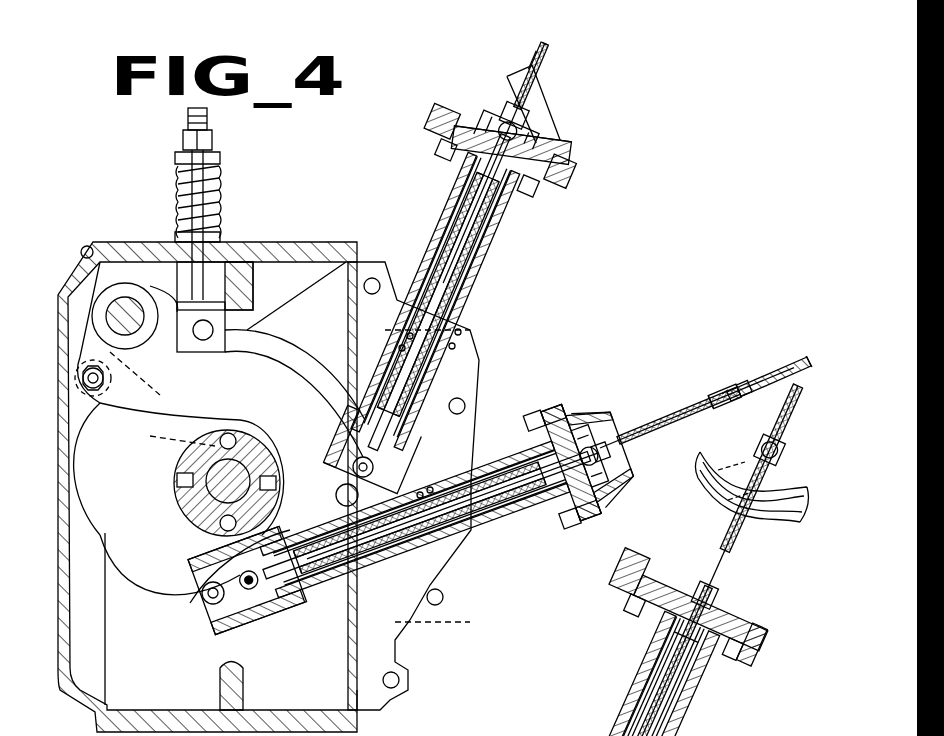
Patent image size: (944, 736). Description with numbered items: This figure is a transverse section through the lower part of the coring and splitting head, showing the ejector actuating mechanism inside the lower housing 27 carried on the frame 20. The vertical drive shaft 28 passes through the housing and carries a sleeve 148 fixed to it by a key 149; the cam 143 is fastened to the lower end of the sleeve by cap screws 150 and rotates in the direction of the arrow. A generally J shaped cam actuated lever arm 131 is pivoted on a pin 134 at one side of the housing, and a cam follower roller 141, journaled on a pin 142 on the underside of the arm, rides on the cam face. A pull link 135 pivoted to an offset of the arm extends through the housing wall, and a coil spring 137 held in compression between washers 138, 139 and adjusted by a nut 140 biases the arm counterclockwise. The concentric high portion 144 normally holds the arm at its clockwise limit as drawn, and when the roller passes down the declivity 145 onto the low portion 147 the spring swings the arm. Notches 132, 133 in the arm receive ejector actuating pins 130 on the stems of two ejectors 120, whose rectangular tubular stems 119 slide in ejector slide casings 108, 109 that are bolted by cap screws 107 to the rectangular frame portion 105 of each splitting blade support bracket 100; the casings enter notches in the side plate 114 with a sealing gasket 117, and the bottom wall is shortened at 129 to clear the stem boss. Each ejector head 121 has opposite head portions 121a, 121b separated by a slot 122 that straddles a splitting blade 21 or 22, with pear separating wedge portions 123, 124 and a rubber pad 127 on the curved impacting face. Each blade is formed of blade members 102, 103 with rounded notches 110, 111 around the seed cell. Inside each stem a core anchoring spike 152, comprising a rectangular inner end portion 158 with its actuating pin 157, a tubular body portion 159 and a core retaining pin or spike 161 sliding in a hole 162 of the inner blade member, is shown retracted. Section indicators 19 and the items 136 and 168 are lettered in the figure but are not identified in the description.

The section line 19- 19 is at (50, 491).
The frame 20 is at (395, 666).
The splitting blade 21 is at (757, 375).
The splitting blade 22 is at (545, 82).
The lower housing 27 is at (360, 694).
The vertical drive shaft 28 is at (200, 512).
The splitting blade support bracket 100 is at (578, 178).
The blade member 102 is at (542, 68).
The blade member 103 is at (800, 360).
The rectangular frame portion 105 is at (438, 131).
The cap screws 107 is at (438, 153).
The ejector slide casing 108 is at (448, 190).
The ejector slide casing 109 is at (477, 266).
The rounded notch 110 is at (640, 400).
The rounded notch 111 is at (632, 395).
The side plate 114 is at (393, 641).
The sealing gasket 117 is at (460, 330).
The rectangular tubular stem 119 is at (487, 278).
The ejector 120 is at (450, 210).
The ejector head 121 is at (547, 116).
The head portion 121a is at (500, 112).
The head portion 121b is at (552, 130).
The slot 122 is at (487, 120).
The pear separating wedge portion 123 is at (505, 92).
The pear separating wedge portion 124 is at (556, 146).
The rubber pad 127 is at (442, 118).
The shortened bottom wall portion 129 is at (472, 331).
The ejector actuating pin 130 is at (336, 499).
The cam actuated lever arm 131 is at (254, 409).
The notch 132 is at (202, 610).
The notch 133 is at (352, 484).
The pin 134 is at (124, 317).
The pull link 135 is at (208, 118).
The rod 136 is at (197, 225).
The coil spring 137 is at (222, 185).
The washer 138 is at (222, 238).
The washer 139 is at (221, 157).
The nut 140 is at (205, 147).
The cam follower roller 141 is at (78, 368).
The pin 142 is at (84, 378).
The cam 143 is at (108, 445).
The high portion 144 is at (167, 354).
The declivity 145 is at (98, 532).
The low portion 147 is at (112, 568).
The sleeve 148 is at (188, 500).
The key 149 is at (205, 490).
The cap screws 150 is at (200, 438).
The core anchoring spike 152 is at (455, 230).
The actuating pin 157 is at (328, 434).
The rectangular inner end portion 158 is at (348, 418).
The tubular body portion 159 is at (460, 246).
The core retaining pin or spike 161 is at (540, 50).
The hole 162 is at (652, 405).
The cable tip 168 is at (535, 65).